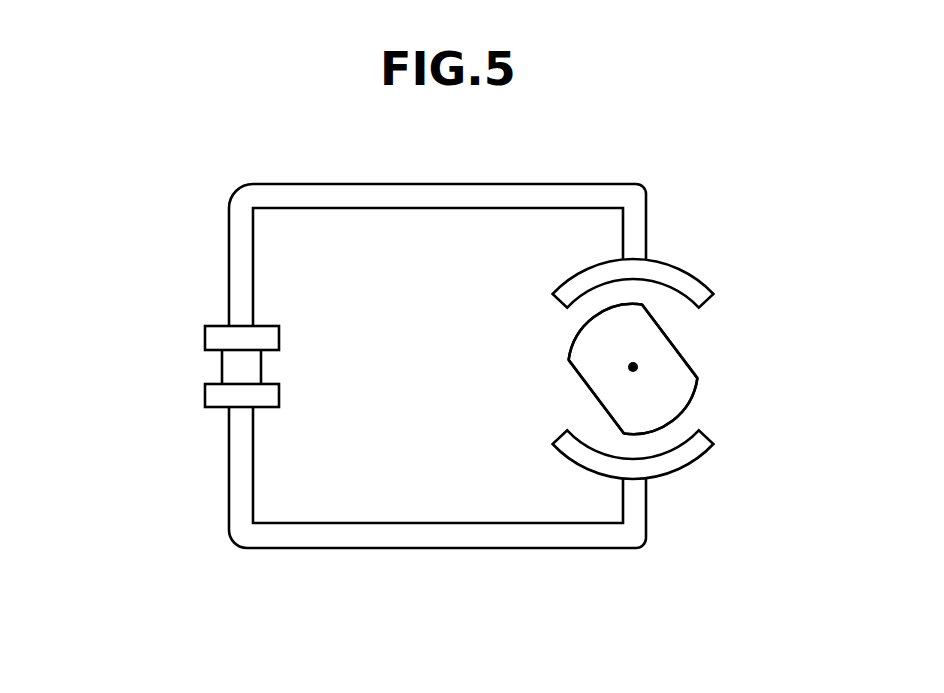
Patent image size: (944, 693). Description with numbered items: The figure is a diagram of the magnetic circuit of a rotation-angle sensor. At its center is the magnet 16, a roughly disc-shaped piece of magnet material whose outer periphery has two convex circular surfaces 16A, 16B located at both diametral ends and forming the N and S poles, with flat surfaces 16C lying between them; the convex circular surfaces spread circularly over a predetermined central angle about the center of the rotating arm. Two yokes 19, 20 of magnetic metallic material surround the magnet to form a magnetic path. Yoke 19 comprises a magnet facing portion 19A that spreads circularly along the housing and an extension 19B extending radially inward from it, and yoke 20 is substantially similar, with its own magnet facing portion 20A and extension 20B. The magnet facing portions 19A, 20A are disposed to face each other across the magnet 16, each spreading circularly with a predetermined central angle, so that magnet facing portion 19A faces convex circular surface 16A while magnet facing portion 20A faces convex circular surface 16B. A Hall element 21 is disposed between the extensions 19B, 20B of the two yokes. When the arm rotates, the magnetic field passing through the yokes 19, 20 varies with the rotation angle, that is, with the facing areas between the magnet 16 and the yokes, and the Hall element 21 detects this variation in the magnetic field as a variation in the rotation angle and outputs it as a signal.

The magnet 16 is at (683, 384).
The convex circular surface 16A is at (575, 335).
The convex circular surface 16B is at (690, 402).
The flat surfaces 16C is at (690, 350).
The yoke 19 is at (466, 200).
The magnet facing portion 19A is at (668, 278).
The extension 19B is at (217, 340).
The yoke 20 is at (466, 536).
The magnet facing portion 20A is at (675, 455).
The extension 20B is at (216, 398).
The Hall element 21 is at (236, 370).